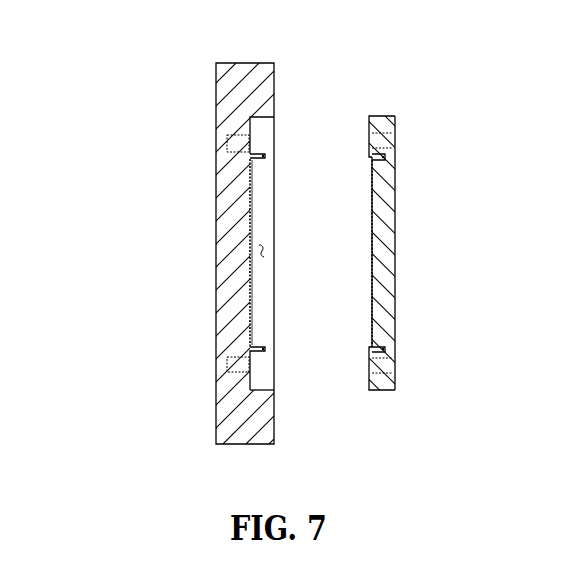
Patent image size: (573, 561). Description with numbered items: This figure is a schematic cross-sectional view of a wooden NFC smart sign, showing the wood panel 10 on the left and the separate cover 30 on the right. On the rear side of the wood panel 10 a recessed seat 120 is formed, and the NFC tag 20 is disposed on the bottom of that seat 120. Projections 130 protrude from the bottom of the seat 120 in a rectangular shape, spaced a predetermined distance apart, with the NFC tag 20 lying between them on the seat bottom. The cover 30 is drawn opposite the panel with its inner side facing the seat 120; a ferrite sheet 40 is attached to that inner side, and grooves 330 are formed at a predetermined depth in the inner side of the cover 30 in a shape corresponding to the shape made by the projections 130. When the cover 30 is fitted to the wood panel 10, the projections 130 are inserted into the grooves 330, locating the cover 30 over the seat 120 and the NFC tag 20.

The wood panel 10 is at (226, 117).
The NFC tag 20 is at (247, 320).
The seat 120 is at (259, 250).
The projections 130 is at (265, 157).
The cover 30 is at (390, 232).
The ferrite sheet 40 is at (388, 277).
The grooves 330 is at (384, 157).